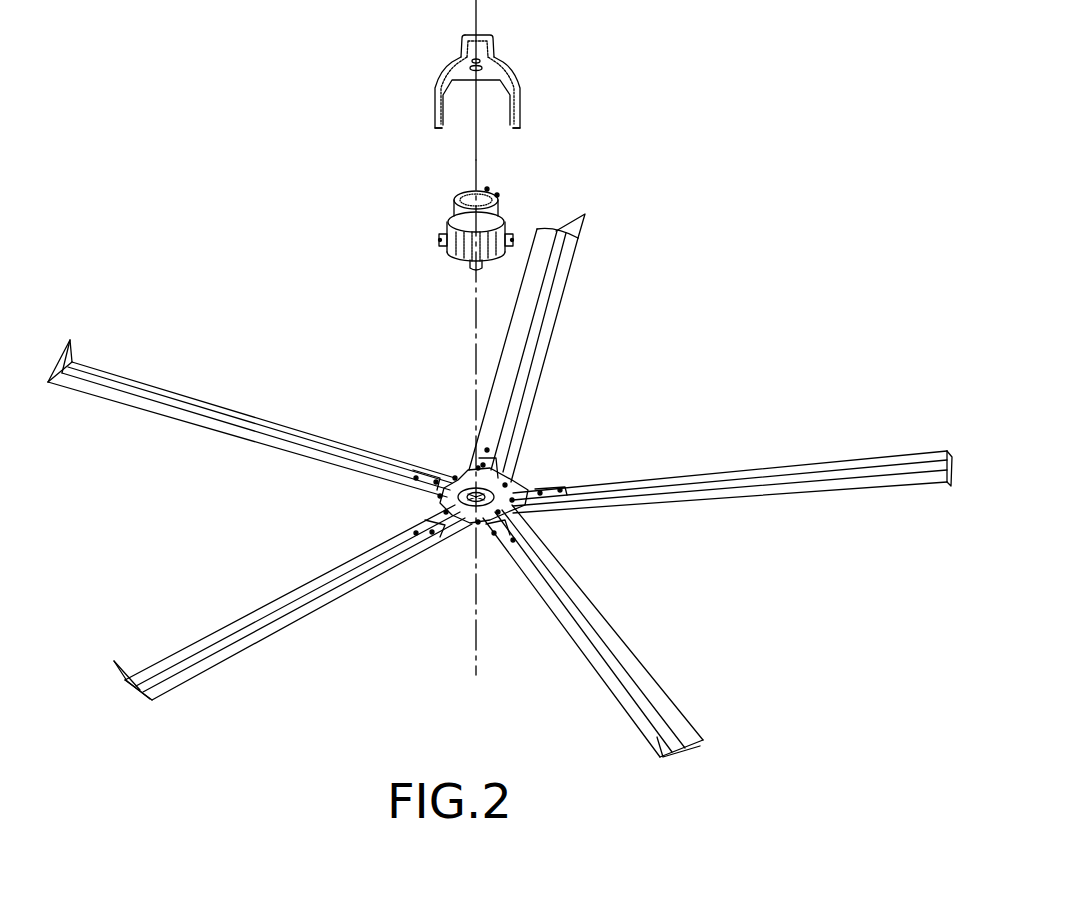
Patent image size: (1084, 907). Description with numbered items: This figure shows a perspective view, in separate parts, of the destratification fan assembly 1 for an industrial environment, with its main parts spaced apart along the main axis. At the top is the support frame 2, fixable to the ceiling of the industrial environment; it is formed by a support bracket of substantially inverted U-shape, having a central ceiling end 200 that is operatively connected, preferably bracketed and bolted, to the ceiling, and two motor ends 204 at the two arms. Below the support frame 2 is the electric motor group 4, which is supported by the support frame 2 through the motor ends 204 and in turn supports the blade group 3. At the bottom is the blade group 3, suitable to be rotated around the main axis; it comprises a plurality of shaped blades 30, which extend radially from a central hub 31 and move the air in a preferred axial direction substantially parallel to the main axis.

The destratification fan assembly 1 is at (858, 116).
The support frame 2 is at (362, 100).
The ceiling end 200 is at (455, 55).
The motor end 204 is at (440, 128).
The electric motor group 4 is at (412, 240).
The blade group 3 is at (756, 586).
The shaped blade 30 is at (553, 308).
The hub 31 is at (500, 484).